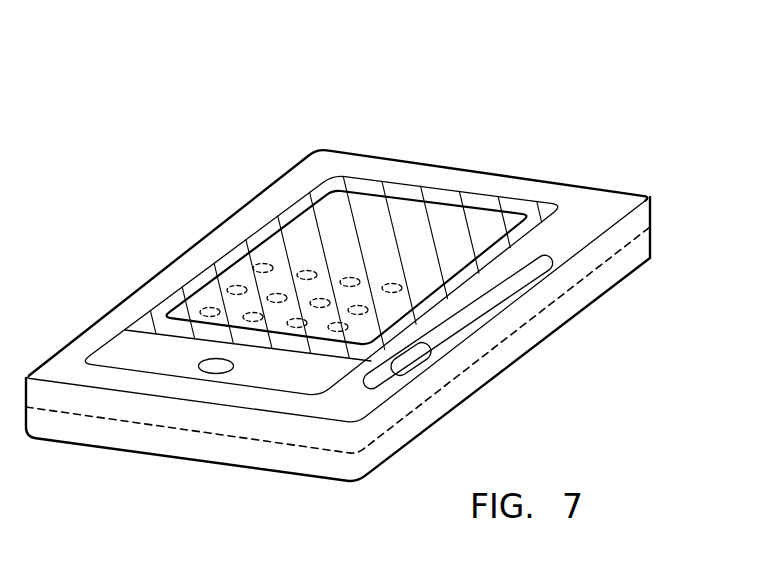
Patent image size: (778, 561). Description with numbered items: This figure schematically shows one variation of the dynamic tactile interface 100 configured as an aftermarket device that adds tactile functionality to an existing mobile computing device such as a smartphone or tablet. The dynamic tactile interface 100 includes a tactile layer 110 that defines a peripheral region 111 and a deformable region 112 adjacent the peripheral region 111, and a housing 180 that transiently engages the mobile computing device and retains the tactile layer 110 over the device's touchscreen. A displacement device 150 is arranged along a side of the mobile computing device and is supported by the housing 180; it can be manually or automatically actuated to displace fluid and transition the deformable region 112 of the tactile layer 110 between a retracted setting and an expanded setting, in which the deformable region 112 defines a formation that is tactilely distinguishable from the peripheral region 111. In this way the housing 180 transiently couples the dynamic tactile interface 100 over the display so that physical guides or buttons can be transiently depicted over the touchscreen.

The dynamic tactile interface 100 is at (604, 103).
The tactile layer 110 is at (376, 225).
The peripheral region 111 is at (291, 238).
The deformable region 112 is at (200, 298).
The displacement device 150 is at (428, 361).
The housing 180 is at (622, 247).